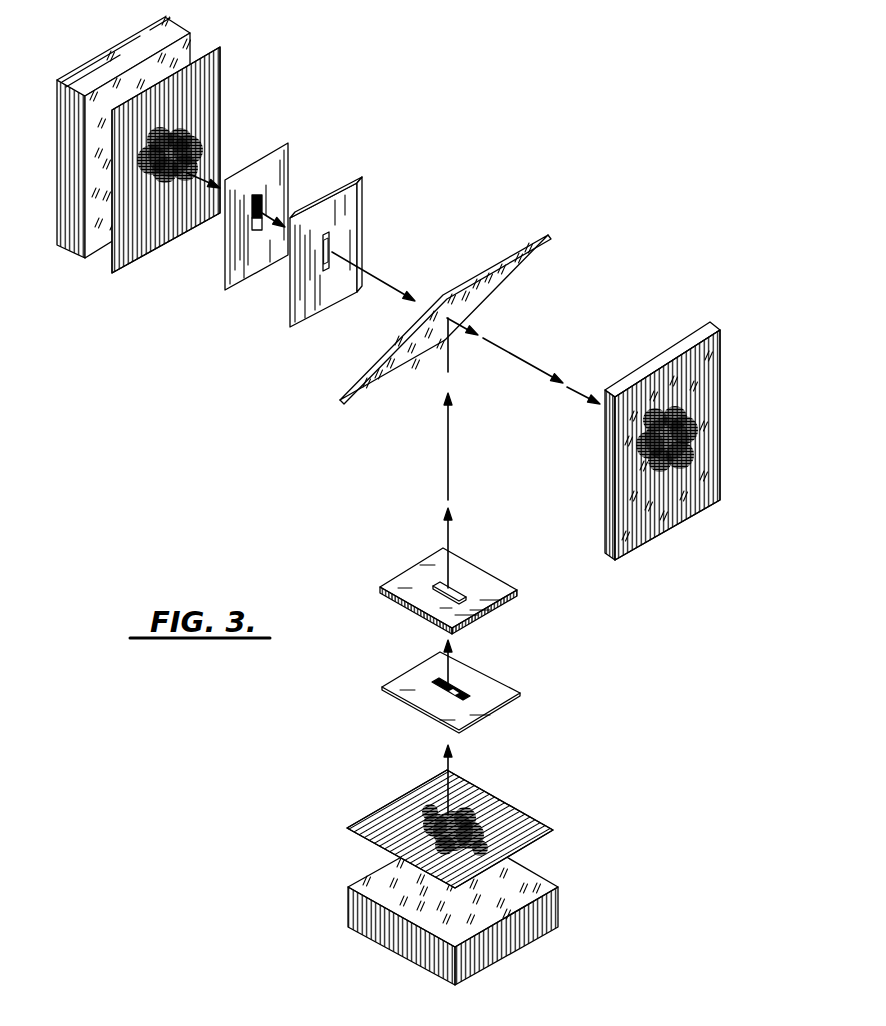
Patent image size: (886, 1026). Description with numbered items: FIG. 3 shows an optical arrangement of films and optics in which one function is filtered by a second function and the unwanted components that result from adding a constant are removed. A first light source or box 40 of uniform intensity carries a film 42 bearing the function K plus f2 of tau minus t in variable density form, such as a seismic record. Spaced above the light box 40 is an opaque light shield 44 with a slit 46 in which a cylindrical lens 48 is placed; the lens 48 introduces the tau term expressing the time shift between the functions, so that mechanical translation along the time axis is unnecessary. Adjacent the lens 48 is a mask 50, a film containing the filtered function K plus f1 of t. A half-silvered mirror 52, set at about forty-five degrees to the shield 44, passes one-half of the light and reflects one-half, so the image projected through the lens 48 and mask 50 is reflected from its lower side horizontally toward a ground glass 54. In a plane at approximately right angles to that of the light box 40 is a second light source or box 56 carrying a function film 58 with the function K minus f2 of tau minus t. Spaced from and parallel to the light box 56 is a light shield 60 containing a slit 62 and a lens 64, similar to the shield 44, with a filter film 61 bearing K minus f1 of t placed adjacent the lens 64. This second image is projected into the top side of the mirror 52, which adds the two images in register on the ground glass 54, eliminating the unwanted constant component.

The first light source or box 40 is at (558, 887).
The film 42 is at (497, 795).
The opaque light shield 44 is at (495, 613).
The slit 46 is at (463, 592).
The cylindrical lens 48 is at (450, 588).
The mask 50 is at (460, 687).
The half-silvered mirror 52 is at (548, 235).
The ground glass 54 is at (713, 330).
The second light source or box 56 is at (178, 30).
The function film 58 is at (220, 50).
The light shield 60 is at (357, 185).
The filter film 61 is at (262, 193).
The slit 62 is at (329, 235).
The lens 64 is at (329, 245).